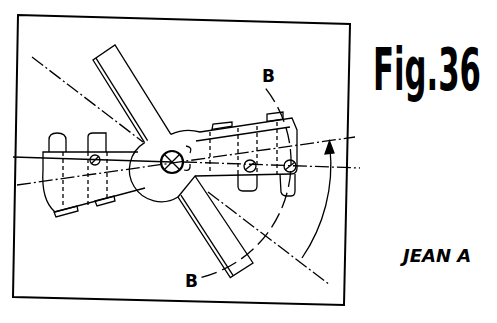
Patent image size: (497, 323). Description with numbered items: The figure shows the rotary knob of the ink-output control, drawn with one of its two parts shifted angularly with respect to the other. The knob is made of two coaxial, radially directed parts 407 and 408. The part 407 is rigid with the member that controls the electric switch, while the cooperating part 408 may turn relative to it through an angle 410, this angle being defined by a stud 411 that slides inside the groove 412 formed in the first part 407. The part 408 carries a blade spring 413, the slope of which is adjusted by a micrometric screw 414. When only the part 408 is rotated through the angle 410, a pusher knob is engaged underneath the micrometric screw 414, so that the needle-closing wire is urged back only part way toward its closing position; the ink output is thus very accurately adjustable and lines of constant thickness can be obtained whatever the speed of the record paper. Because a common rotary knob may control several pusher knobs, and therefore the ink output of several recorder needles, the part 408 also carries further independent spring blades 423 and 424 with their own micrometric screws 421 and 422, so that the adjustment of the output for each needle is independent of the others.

The part of the rotary knob 407 is at (210, 227).
The cooperating part of the rotary knob 408 is at (225, 138).
The angle 410 is at (322, 223).
The stud 411 is at (183, 134).
The groove 412 is at (182, 172).
The blade spring 413 is at (254, 190).
The micrometric screw 414 is at (241, 174).
The micrometric screw 421 is at (328, 148).
The micrometric screw 422 is at (100, 156).
The spring blade 423 is at (294, 192).
The spring blade 424 is at (94, 162).